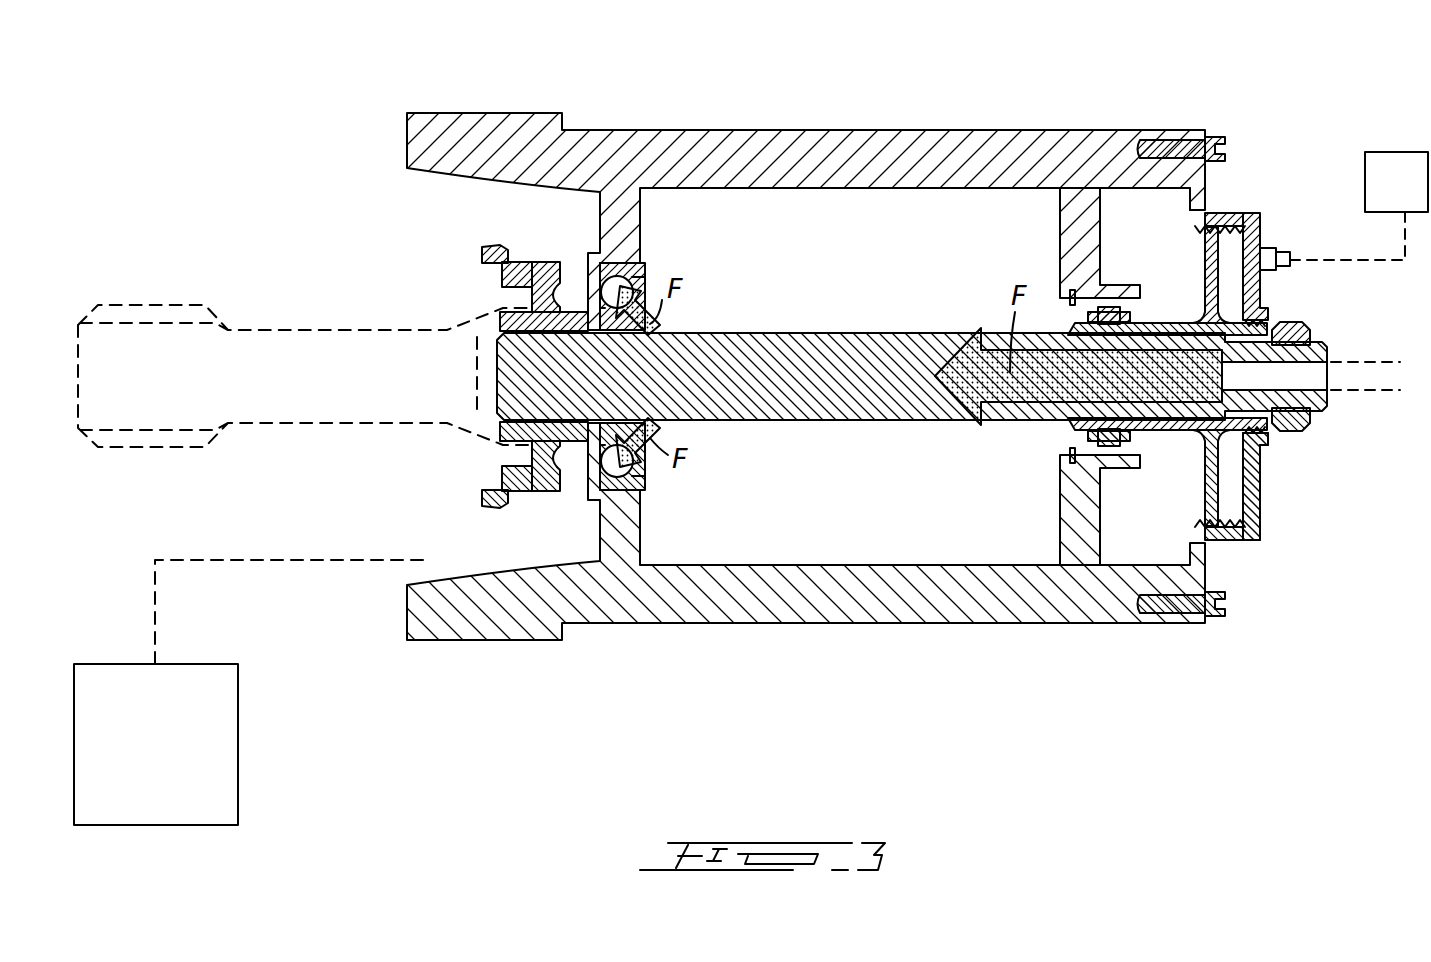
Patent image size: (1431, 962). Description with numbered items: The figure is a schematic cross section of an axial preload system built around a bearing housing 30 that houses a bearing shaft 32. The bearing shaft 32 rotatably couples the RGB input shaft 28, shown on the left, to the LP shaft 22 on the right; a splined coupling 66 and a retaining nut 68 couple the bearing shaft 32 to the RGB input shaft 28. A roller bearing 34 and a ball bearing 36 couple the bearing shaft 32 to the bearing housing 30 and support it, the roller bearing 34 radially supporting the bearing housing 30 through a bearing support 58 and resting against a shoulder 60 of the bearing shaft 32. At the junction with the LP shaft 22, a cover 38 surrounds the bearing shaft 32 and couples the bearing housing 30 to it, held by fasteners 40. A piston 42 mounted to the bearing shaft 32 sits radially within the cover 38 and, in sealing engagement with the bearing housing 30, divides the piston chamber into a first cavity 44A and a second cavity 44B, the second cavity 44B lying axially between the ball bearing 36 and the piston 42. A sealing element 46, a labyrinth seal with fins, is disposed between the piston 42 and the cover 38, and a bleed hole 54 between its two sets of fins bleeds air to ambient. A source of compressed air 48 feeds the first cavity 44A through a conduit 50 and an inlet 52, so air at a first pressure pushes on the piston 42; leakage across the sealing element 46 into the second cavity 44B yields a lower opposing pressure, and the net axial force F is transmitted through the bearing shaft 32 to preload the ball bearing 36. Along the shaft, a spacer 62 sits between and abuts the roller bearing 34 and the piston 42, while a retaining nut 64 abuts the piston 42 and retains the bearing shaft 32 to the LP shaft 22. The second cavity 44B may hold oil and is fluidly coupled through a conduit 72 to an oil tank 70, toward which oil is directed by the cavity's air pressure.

The LP shaft 22 is at (1373, 373).
The RGB input shaft 28 is at (246, 340).
The bearing housing 30 is at (612, 150).
The bearing shaft 32 is at (759, 385).
The roller bearing 34 is at (1112, 437).
The ball bearing 36 is at (610, 435).
The cover 38 is at (1250, 510).
The fastener 40 is at (1168, 148).
The piston 42 is at (1210, 482).
The first cavity 44A is at (1226, 248).
The second cavity 44B is at (1125, 218).
The sealing element 46 is at (1231, 215).
The source of compressed air 48 is at (1424, 196).
The conduit 50 is at (1403, 262).
The inlet 52 is at (1274, 250).
The bleed hole 54 is at (1218, 212).
The bearing support 58 is at (1073, 222).
The shoulder 60 is at (1080, 437).
The spacer 62 is at (1150, 430).
The retaining nut 64 is at (1290, 432).
The splined coupling 66 is at (567, 315).
The retaining nut 68 is at (520, 440).
The oil tank 70 is at (136, 761).
The conduit 72 is at (307, 560).